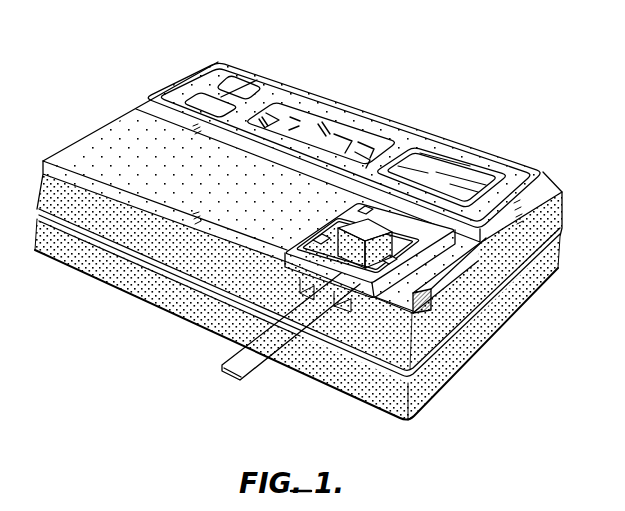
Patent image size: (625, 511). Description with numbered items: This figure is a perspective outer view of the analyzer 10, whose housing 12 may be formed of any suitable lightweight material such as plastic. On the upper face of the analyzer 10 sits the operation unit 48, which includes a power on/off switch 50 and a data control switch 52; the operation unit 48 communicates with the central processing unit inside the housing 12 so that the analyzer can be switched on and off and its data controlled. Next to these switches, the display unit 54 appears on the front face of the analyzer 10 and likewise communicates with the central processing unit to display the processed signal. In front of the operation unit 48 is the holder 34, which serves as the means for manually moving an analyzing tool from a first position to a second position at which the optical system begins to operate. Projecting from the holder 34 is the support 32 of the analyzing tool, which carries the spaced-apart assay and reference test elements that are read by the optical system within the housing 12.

The analyzer 10 is at (492, 106).
The housing 12 is at (488, 336).
The support 32 is at (240, 360).
The holder 34 is at (303, 218).
The operation unit 48 is at (339, 126).
The power on/off switch 50 is at (248, 82).
The data control switch 52 is at (187, 99).
The display unit 54 is at (337, 118).